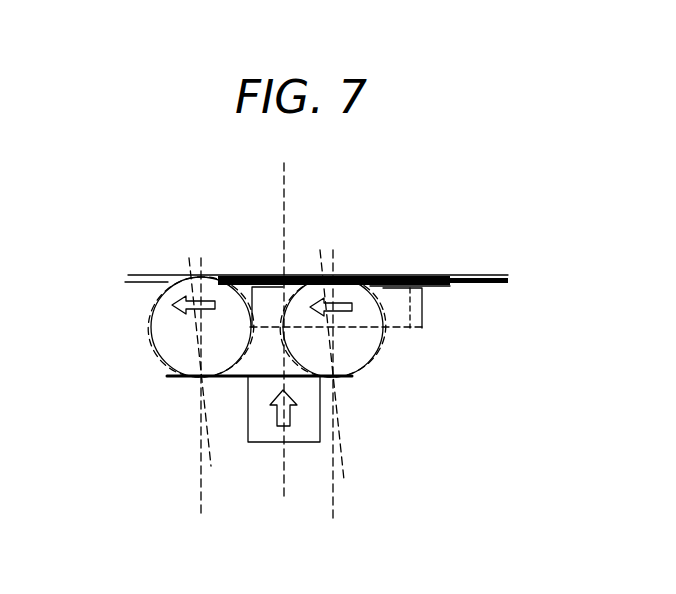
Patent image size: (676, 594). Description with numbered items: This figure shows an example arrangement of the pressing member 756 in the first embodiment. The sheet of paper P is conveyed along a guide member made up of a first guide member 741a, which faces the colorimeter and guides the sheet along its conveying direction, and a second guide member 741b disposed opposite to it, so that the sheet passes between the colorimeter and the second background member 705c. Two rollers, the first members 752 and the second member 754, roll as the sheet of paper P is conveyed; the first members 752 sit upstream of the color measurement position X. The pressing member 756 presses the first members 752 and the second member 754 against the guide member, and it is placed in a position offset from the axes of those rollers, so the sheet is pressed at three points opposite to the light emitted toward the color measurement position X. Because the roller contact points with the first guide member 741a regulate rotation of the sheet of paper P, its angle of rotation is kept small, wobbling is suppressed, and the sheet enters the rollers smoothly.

The second member 754 is at (158, 327).
The first members 752 is at (357, 363).
The pressing member 756 is at (267, 417).
The second background member 705c is at (400, 317).
The first guide member 741a is at (395, 277).
The second guide member 741b is at (438, 288).
The sheet of paper P is at (500, 275).
The color measurement position X is at (278, 272).